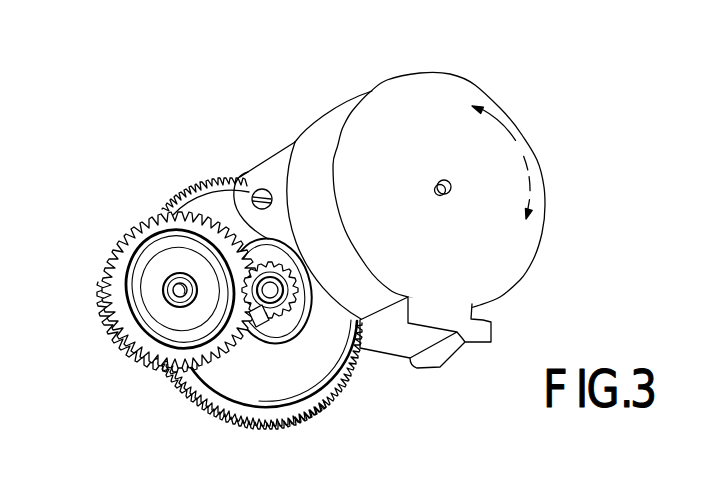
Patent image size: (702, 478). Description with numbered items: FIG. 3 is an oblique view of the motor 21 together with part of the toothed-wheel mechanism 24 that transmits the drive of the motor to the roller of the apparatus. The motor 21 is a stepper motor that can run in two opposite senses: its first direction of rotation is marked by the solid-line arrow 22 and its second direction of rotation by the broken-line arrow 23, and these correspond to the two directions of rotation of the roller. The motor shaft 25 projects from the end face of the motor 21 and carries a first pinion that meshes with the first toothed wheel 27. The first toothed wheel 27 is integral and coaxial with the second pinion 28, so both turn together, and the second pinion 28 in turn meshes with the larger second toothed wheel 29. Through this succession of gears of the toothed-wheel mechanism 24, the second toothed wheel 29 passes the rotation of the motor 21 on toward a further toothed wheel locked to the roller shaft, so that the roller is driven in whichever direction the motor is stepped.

The motor 21 is at (426, 106).
The solid-line arrow 22 is at (503, 124).
The broken-line arrow 23 is at (531, 181).
The toothed-wheel mechanism 24 is at (201, 271).
The motor shaft 25 is at (451, 186).
The first toothed wheel 27 is at (222, 177).
The second pinion 28 is at (256, 313).
The second toothed wheel 29 is at (136, 224).